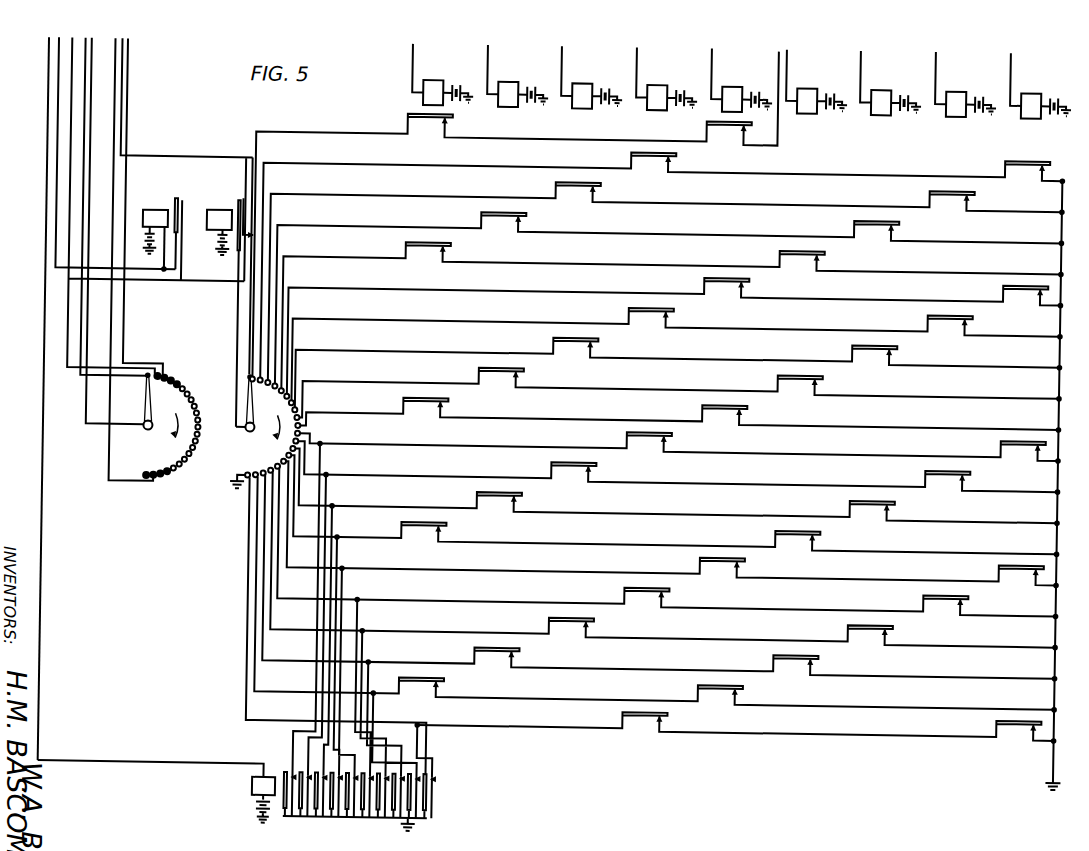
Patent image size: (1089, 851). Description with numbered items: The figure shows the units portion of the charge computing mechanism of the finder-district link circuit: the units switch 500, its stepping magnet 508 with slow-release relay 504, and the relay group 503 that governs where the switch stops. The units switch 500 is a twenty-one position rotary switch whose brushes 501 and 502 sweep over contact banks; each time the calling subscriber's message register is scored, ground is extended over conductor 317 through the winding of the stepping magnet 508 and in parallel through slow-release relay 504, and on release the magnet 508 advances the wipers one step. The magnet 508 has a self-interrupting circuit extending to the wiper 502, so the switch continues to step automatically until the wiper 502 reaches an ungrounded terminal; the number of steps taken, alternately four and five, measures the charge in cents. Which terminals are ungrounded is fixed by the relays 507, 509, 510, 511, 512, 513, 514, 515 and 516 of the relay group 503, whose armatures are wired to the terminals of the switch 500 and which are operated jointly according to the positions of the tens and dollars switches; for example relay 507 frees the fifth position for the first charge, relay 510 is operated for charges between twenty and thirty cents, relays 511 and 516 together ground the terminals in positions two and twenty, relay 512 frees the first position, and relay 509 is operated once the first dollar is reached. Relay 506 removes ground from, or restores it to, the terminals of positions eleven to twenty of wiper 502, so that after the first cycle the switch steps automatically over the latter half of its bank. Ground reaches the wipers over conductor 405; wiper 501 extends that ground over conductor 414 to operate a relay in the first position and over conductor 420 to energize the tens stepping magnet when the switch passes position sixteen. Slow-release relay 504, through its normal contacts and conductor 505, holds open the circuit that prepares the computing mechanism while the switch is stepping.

The conductor 317 is at (53, 163).
The conductor 405 is at (88, 95).
The conductor 414 is at (82, 383).
The conductor 420 is at (109, 460).
The units switch 500 is at (157, 207).
The brush 501 is at (146, 406).
The brush 502 is at (263, 428).
The relay group 503 is at (659, 416).
The slow-release relay 504 is at (216, 215).
The conductor 505 is at (43, 204).
The relay 506 is at (272, 781).
The relay 507 is at (422, 82).
The stepping magnet 508 is at (152, 216).
The relay 509 is at (497, 82).
The relay 510 is at (571, 83).
The relay 511 is at (646, 84).
The relay 512 is at (721, 84).
The relay 513 is at (796, 84).
The relay 514 is at (870, 85).
The relay 515 is at (945, 86).
The relay 516 is at (1020, 86).